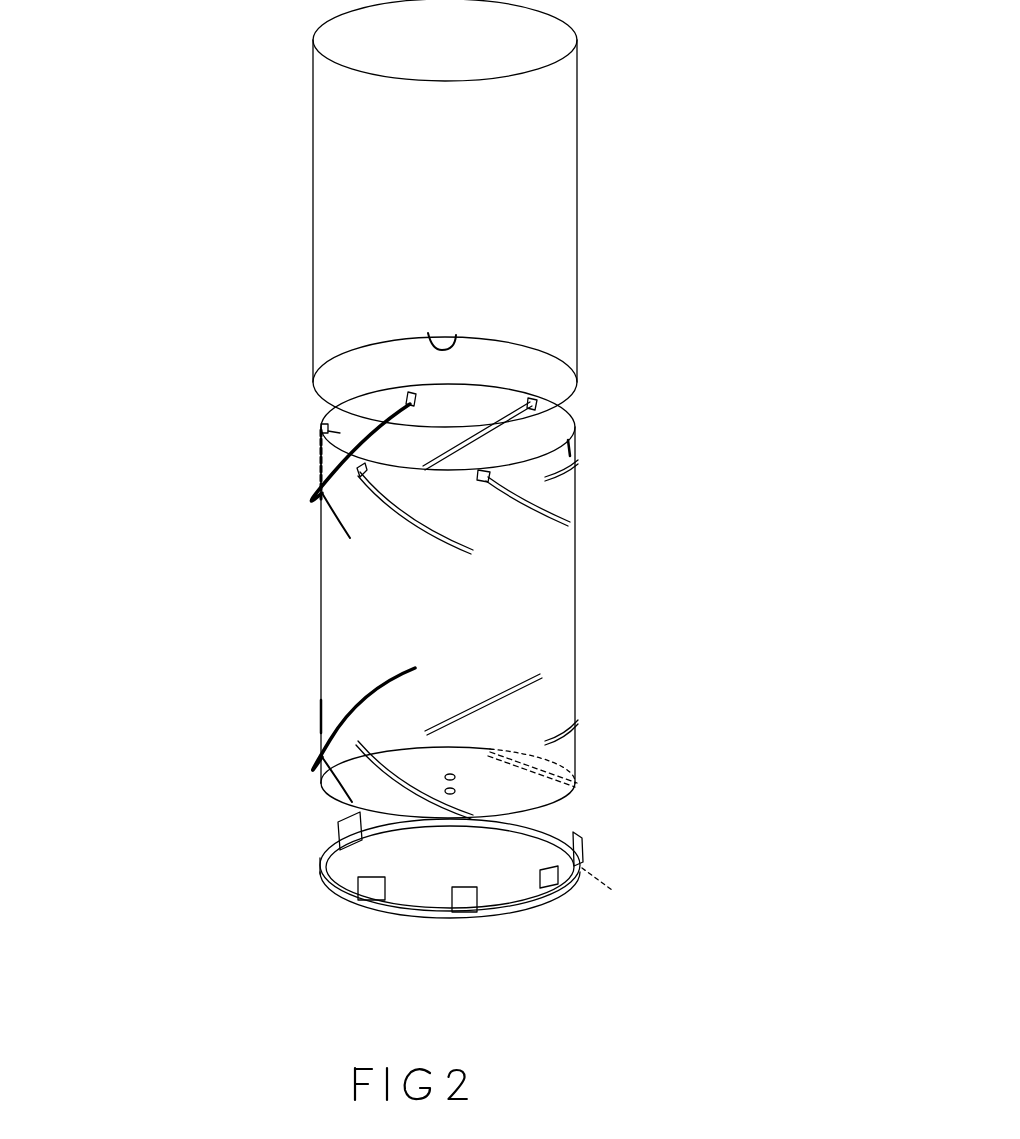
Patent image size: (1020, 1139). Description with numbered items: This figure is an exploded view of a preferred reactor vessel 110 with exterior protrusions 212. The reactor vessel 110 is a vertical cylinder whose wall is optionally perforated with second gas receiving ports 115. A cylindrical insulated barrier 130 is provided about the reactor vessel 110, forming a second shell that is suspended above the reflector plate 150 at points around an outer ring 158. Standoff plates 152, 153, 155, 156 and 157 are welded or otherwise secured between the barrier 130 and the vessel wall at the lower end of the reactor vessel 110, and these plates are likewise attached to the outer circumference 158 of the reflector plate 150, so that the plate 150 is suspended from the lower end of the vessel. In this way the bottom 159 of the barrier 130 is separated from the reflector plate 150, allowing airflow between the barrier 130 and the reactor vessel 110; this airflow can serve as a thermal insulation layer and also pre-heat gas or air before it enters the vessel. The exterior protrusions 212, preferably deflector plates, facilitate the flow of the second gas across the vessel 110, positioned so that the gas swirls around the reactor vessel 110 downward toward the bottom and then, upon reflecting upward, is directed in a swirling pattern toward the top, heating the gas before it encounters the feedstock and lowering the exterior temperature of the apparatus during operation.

The reactor vessel 110 is at (322, 583).
The second gas receiving ports 115 is at (410, 392).
The cylindrical insulated barrier 130 is at (312, 243).
The reflector plate 150 is at (420, 913).
The standoff plate 152 is at (320, 854).
The standoff plate 153 is at (330, 814).
The standoff plate 155 is at (578, 830).
The standoff plate 156 is at (470, 893).
The standoff plate 157 is at (370, 893).
The outer ring 158 is at (556, 832).
The bottom of the barrier 159 is at (428, 333).
The exterior protrusions 212 is at (318, 473).